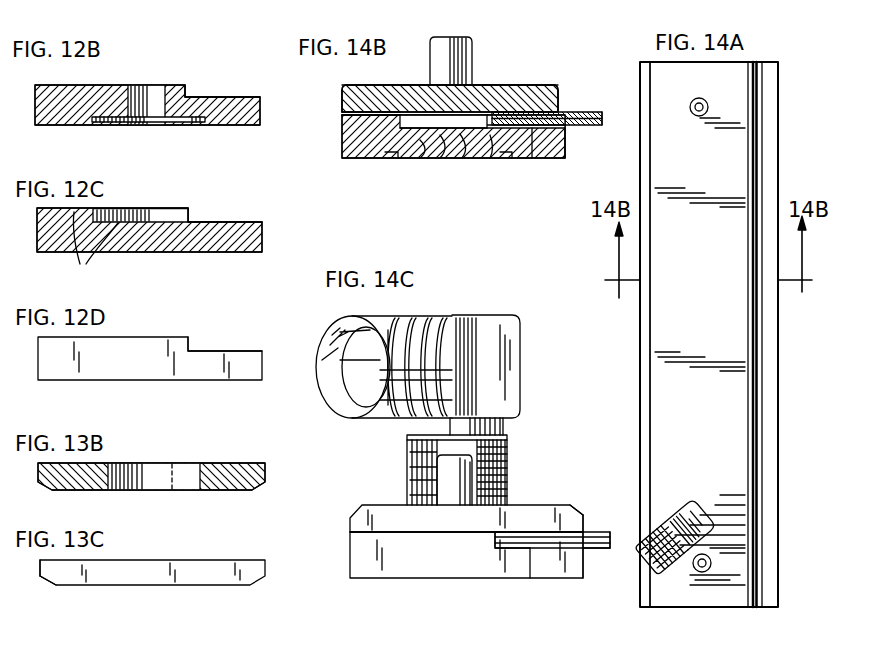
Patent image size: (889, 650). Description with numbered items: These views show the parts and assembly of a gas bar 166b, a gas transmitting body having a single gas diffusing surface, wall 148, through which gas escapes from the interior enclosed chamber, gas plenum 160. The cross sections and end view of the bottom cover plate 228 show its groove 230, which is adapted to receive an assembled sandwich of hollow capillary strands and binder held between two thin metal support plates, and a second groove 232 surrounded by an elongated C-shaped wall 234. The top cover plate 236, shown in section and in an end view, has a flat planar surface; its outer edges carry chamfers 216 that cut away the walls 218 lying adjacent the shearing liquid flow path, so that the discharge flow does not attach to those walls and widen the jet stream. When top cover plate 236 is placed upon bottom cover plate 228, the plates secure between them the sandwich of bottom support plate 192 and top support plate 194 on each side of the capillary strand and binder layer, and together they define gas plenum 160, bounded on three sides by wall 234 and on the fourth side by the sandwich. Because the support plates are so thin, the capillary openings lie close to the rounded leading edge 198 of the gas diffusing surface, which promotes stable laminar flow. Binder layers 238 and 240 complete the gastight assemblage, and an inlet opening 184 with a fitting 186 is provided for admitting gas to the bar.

In FIG. 14B, the gas diffusing surface 148 is at (600, 126).
In FIG. 14C, the gas diffusing surface 148 is at (610, 545).
In FIG. 14A, the gas diffusing surface 148 is at (778, 400).
In FIG. 14B, the gas plenum 160 is at (420, 135).
In FIG. 14B, the gas bar 166b is at (487, 63).
In FIG. 14C, the gas bar 166b is at (519, 476).
In FIG. 14A, the gas bar 166b is at (779, 142).
In FIG. 14C, the inlet opening 184 is at (330, 392).
In FIG. 14A, the inlet opening 184 is at (642, 575).
In FIG. 14C, the fitting 186 is at (418, 452).
In FIG. 14A, the fitting 186 is at (688, 492).
In FIG. 14B, the bottom support plate 192 is at (572, 135).
In FIG. 14C, the bottom support plate 192 is at (492, 548).
In FIG. 14B, the top support plate 194 is at (590, 112).
In FIG. 14C, the top support plate 194 is at (528, 535).
In FIG. 14A, the top support plate 194 is at (770, 523).
In FIG. 14B, the leading edge 198 is at (586, 135).
In FIG. 14C, the leading edge 198 is at (608, 552).
In FIG. 13C, the chamfer 216 is at (51, 584).
In FIG. 14B, the chamfer 216 is at (348, 88).
In FIG. 14C, the chamfer 216 is at (585, 528).
In FIG. 14A, the chamfer 216 is at (760, 472).
In FIG. 13C, the wall 218 is at (38, 566).
In FIG. 14B, the wall 218 is at (342, 103).
In FIG. 14C, the wall 218 is at (583, 530).
In FIG. 12B, the bottom cover plate 228 is at (116, 137).
In FIG. 12C, the bottom cover plate 228 is at (195, 251).
In FIG. 12D, the bottom cover plate 228 is at (133, 382).
In FIG. 14B, the bottom cover plate 228 is at (375, 158).
In FIG. 14C, the bottom cover plate 228 is at (418, 572).
In FIG. 12B, the groove 230 is at (203, 96).
In FIG. 12C, the groove 230 is at (233, 222).
In FIG. 12D, the groove 230 is at (222, 351).
In FIG. 12C, the second groove 232 is at (156, 213).
In FIG. 12B, the C-shaped wall 234 is at (72, 93).
In FIG. 12C, the C-shaped wall 234 is at (76, 243).
In FIG. 14B, the C-shaped wall 234 is at (342, 120).
In FIG. 13B, the top cover plate 236 is at (188, 490).
In FIG. 13C, the top cover plate 236 is at (185, 560).
In FIG. 14B, the top cover plate 236 is at (525, 85).
In FIG. 14C, the top cover plate 236 is at (396, 520).
In FIG. 14A, the top cover plate 236 is at (698, 333).
In FIG. 14B, the binder layer 238 is at (384, 112).
In FIG. 14C, the binder layer 238 is at (360, 537).
In FIG. 14B, the binder layer 240 is at (532, 132).
In FIG. 14C, the binder layer 240 is at (540, 560).